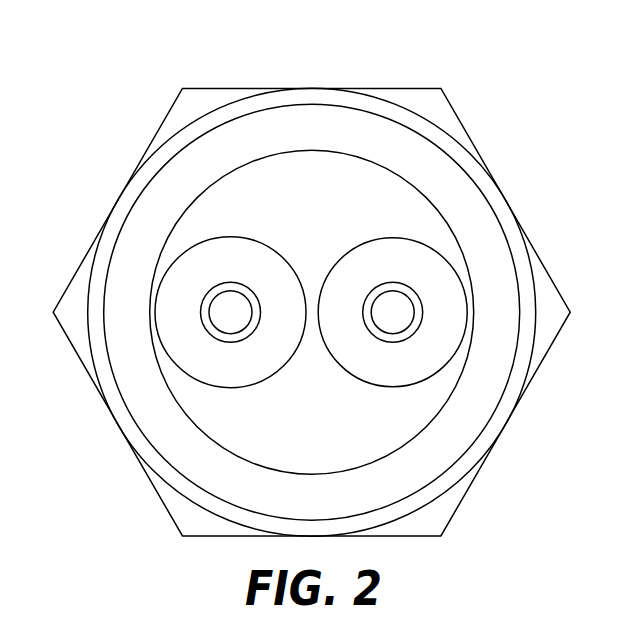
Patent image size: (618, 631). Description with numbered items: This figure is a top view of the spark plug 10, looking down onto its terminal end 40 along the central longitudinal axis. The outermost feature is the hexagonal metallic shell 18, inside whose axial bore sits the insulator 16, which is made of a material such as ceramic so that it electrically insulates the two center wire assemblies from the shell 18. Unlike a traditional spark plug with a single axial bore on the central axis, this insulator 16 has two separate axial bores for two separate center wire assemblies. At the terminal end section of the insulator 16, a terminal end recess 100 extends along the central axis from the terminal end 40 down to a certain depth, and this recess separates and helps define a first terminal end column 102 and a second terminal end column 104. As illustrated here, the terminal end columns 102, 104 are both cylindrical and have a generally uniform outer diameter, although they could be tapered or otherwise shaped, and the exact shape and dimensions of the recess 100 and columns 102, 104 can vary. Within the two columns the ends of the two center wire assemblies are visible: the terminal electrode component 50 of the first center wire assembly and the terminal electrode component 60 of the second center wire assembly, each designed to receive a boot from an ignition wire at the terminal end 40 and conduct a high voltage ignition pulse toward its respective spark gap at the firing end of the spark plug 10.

The spark plug 10 is at (457, 92).
The terminal end 40 is at (118, 145).
The insulator 16 is at (412, 210).
The metallic shell 18 is at (495, 238).
The terminal end recess 100 is at (313, 290).
The first terminal end column 102 is at (442, 285).
The second terminal end column 104 is at (182, 285).
The terminal electrode component 50 is at (397, 320).
The terminal electrode component 60 is at (207, 323).